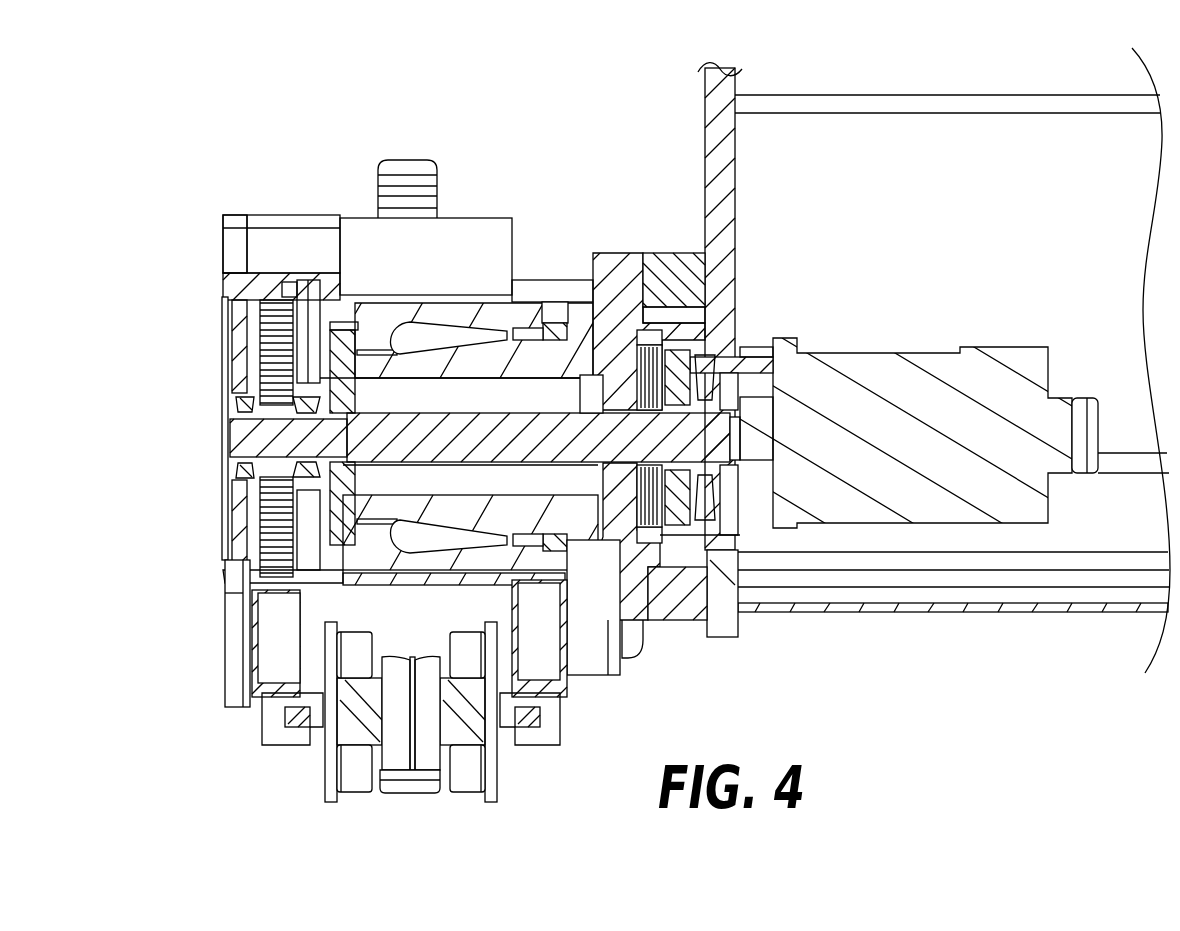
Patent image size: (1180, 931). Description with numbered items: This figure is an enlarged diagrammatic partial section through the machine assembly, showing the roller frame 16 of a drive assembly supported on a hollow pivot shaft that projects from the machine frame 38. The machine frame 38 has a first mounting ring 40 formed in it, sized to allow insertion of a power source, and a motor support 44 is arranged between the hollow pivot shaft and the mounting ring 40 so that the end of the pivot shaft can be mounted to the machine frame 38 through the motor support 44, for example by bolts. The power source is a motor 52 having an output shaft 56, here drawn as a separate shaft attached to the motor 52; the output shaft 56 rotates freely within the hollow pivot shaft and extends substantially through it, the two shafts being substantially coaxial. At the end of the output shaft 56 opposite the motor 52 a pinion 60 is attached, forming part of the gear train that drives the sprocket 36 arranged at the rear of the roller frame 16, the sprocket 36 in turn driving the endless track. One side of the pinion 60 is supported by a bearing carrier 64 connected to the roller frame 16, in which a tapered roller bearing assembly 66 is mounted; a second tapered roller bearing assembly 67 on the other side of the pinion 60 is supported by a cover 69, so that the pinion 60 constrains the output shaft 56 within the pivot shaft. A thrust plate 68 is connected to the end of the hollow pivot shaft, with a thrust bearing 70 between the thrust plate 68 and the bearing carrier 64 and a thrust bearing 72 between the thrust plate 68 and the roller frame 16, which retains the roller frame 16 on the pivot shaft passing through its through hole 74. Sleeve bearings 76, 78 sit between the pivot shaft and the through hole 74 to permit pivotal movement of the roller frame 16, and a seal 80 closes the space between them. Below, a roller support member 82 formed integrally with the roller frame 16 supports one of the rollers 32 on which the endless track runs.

The roller frame 16 is at (280, 213).
The rollers 32 is at (352, 790).
The sprocket 36 is at (403, 161).
The machine frame 38 is at (707, 112).
The first mounting ring 40 is at (658, 262).
The motor support 44 is at (623, 262).
The motor 52 is at (905, 352).
The output shaft 56 is at (432, 422).
The pinion 60 is at (243, 438).
The bearing carrier 64 is at (300, 383).
The tapered roller bearing assembly 66 is at (350, 413).
The tapered roller bearing assembly 67 is at (238, 404).
The thrust plate 68 is at (345, 500).
The cover 69 is at (222, 243).
The thrust bearing 70 is at (315, 338).
The thrust bearing 72 is at (356, 352).
The through hole 74 is at (553, 323).
The sleeve bearing 76 is at (400, 520).
The sleeve bearing 78 is at (532, 340).
The seal 80 is at (560, 330).
The roller support member 82 is at (258, 695).